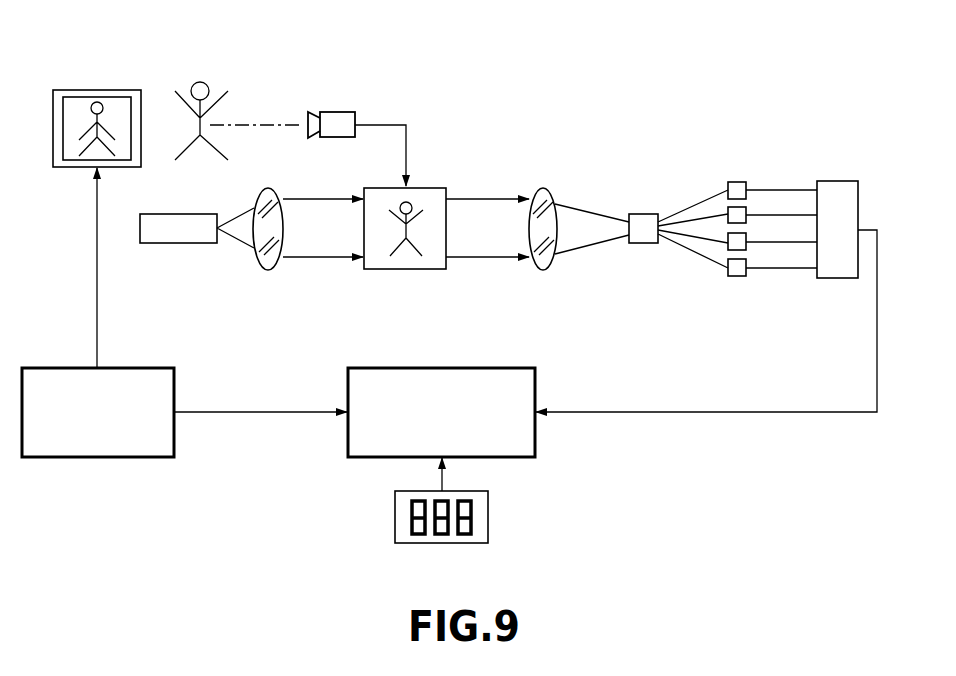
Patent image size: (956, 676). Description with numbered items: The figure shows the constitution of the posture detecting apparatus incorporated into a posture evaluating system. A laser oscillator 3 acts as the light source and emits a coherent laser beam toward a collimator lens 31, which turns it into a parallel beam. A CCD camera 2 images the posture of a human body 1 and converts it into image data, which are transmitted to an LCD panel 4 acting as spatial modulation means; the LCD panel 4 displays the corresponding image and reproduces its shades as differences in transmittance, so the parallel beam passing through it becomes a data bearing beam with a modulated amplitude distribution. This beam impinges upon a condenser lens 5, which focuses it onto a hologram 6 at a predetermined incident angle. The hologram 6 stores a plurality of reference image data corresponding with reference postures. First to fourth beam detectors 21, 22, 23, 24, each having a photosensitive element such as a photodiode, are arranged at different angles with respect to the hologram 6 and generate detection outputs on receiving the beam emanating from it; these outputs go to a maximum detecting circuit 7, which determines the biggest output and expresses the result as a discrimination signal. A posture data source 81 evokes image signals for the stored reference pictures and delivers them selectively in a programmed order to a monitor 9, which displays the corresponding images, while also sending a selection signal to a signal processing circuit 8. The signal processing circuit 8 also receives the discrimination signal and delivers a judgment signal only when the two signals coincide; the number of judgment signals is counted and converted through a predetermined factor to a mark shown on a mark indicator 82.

The human body 1 is at (220, 85).
The CCD camera 2 is at (340, 112).
The laser oscillator 3 is at (178, 245).
The collimator lens 31 is at (268, 270).
The LCD panel 4 is at (400, 272).
The condenser lens 5 is at (542, 270).
The hologram 6 is at (641, 245).
The maximum detecting circuit 7 is at (838, 280).
The signal processing circuit 8 is at (348, 370).
The monitor 9 is at (100, 90).
The first beam detector 21 is at (735, 278).
The second beam detector 22 is at (728, 246).
The third beam detector 23 is at (728, 212).
The fourth beam detector 24 is at (737, 182).
The posture data source 81 is at (105, 460).
The mark indicator 82 is at (394, 521).